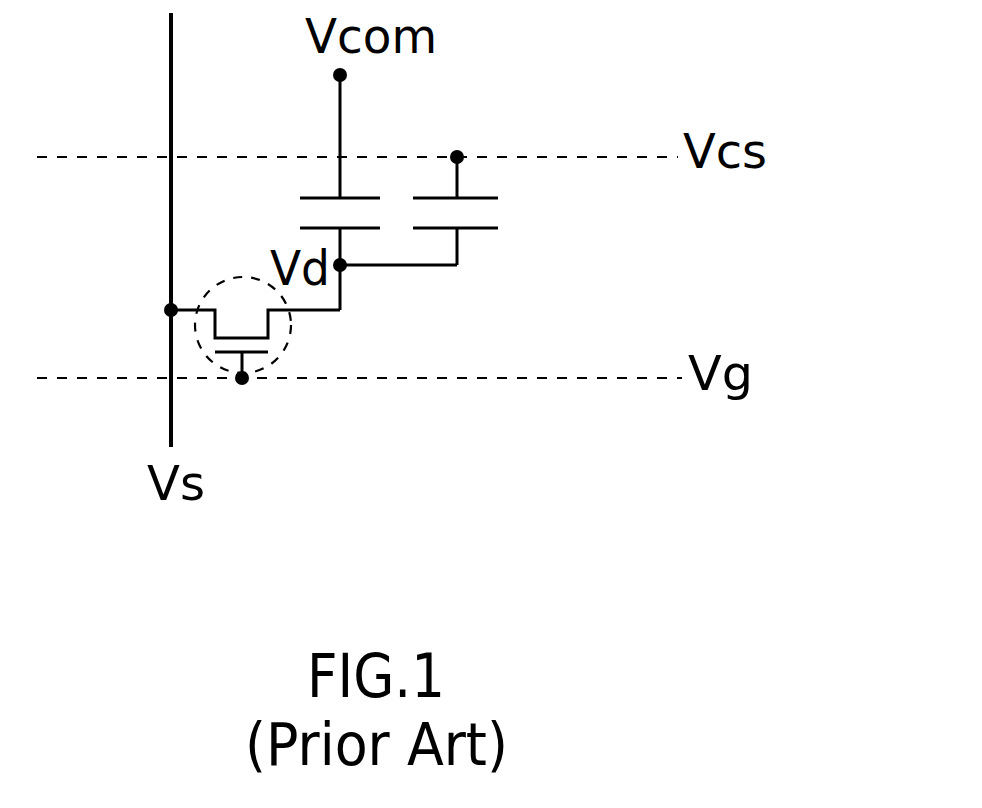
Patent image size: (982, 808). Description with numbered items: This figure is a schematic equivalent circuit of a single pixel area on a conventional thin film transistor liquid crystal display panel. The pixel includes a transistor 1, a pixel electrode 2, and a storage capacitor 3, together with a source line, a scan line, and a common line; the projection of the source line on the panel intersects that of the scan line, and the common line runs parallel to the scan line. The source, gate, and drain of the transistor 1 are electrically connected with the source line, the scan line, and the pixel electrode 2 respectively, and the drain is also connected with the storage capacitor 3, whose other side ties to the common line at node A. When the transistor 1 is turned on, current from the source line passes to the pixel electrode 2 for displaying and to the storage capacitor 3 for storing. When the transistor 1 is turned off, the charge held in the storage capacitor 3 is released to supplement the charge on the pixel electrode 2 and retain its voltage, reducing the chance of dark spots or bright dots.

The transistor 1 is at (266, 385).
The pixel electrode 2 is at (210, 249).
The storage capacitor 3 is at (520, 268).
The node A is at (467, 235).